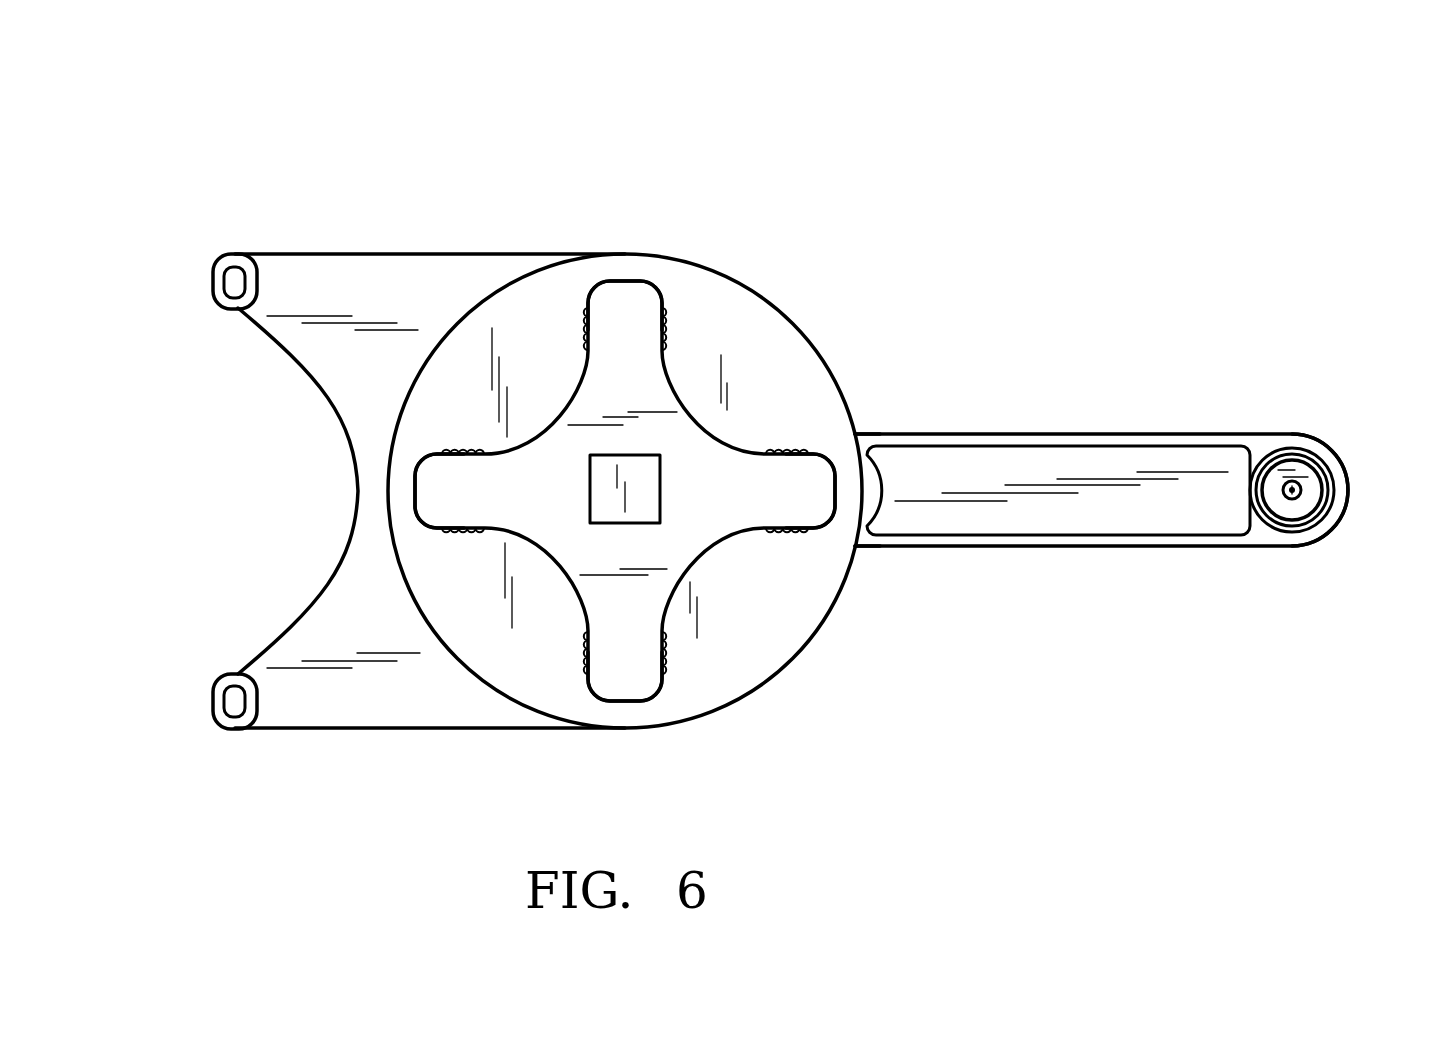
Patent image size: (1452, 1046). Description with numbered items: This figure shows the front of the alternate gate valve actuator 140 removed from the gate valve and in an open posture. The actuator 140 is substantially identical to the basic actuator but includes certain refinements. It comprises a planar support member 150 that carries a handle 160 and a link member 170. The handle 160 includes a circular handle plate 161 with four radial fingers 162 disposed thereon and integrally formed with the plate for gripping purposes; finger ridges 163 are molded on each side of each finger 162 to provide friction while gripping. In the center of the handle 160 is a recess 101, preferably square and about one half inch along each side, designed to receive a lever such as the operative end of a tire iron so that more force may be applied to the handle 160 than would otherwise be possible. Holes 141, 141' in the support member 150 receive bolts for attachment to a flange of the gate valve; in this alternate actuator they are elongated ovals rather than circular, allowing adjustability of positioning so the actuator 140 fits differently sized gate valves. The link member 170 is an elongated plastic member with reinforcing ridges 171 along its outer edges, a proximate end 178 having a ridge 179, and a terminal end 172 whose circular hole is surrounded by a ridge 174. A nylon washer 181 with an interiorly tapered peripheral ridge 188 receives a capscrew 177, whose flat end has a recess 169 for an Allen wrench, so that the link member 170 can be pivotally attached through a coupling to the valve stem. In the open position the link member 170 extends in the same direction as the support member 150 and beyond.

The alternate gate valve actuator 140 is at (741, 142).
The planar support member 150 is at (387, 278).
The hole 141 is at (180, 276).
The hole 141' is at (180, 692).
The circular handle plate 161 is at (770, 644).
The handle 160 is at (685, 511).
The finger 162 is at (629, 304).
The finger ridge 163 is at (582, 321).
The recess 101 is at (587, 478).
The link member 170 is at (972, 417).
The reinforcing ridge 171 is at (1085, 438).
The ridge 179 is at (862, 468).
The proximate end 178 is at (878, 561).
The terminal end 172 is at (1283, 583).
The ridge 174 is at (1267, 447).
The nylon washer 181 is at (1352, 455).
The peripheral ridge 188 is at (1307, 458).
The capscrew 177 is at (1305, 490).
The recess 169 is at (1308, 505).